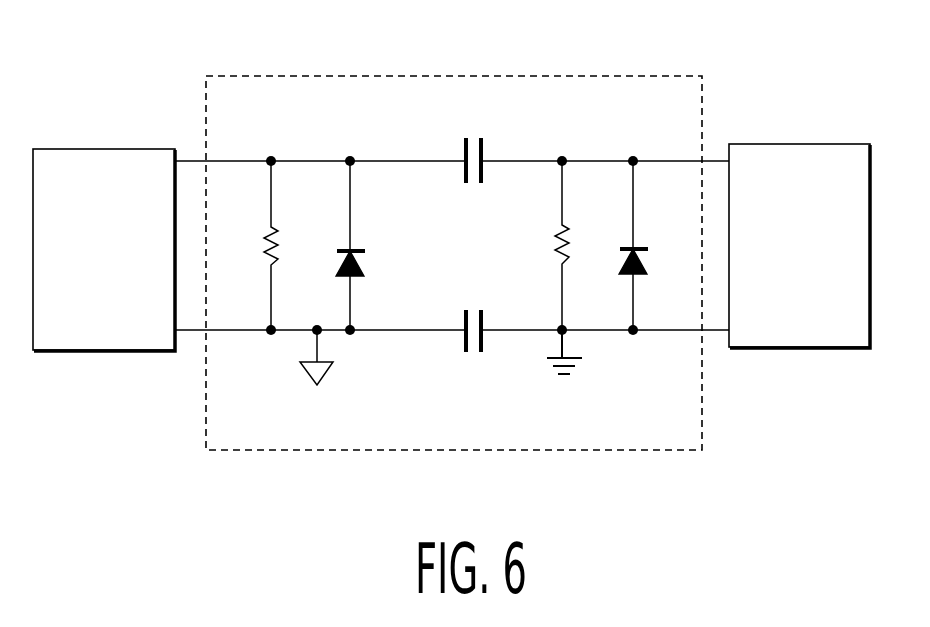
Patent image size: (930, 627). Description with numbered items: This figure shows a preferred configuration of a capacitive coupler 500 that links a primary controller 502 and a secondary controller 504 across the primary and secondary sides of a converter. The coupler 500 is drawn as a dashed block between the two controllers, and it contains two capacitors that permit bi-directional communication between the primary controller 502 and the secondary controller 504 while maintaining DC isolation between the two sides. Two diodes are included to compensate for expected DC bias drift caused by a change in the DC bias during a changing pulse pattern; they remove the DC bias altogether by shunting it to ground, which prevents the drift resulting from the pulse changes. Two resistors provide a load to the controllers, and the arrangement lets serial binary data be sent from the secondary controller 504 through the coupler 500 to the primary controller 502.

The isolation circuit 500 is at (345, 75).
The primary controller 502 is at (812, 348).
The secondary controller 504 is at (104, 352).